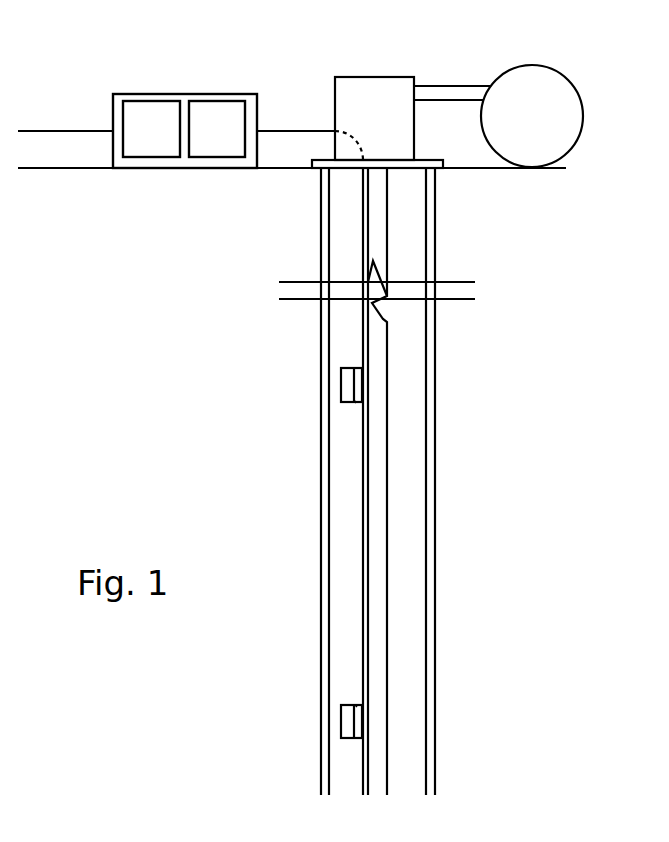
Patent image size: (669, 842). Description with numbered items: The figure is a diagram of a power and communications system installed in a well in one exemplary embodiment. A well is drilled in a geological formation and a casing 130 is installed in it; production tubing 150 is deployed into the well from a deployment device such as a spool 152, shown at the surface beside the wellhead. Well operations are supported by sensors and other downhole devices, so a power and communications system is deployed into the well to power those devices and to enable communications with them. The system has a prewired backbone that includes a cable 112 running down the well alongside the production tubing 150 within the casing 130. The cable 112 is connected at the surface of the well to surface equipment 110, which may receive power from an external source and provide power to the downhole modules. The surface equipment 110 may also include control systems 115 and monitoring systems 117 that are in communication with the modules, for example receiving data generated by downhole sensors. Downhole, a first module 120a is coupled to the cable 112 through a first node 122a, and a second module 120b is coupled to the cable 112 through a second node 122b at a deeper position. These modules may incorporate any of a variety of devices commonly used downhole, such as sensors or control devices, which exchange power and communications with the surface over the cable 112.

The surface equipment 110 is at (185, 94).
The control systems 115 is at (137, 99).
The monitoring systems 117 is at (233, 100).
The spool 152 is at (493, 80).
The casing 130 is at (435, 540).
The cable 112 is at (363, 225).
The production tubing 150 is at (390, 362).
The module 120a is at (341, 383).
The node 122a is at (356, 403).
The module 120b is at (341, 722).
The node 122b is at (357, 705).